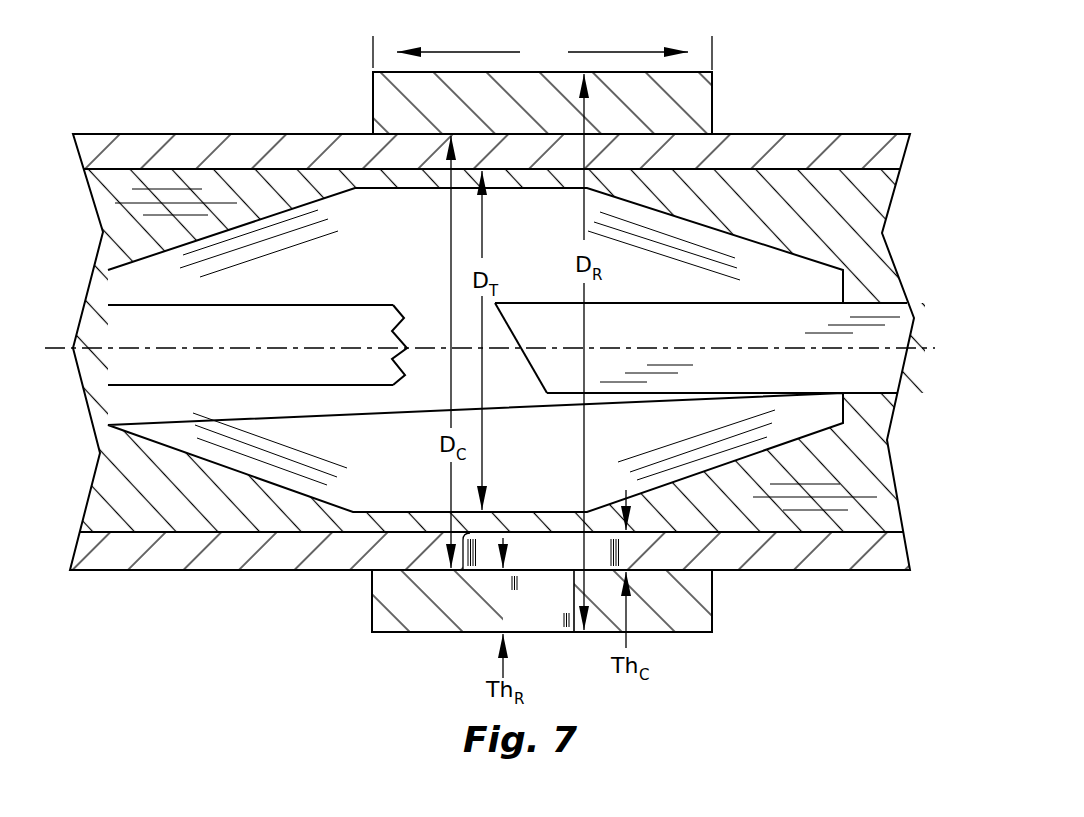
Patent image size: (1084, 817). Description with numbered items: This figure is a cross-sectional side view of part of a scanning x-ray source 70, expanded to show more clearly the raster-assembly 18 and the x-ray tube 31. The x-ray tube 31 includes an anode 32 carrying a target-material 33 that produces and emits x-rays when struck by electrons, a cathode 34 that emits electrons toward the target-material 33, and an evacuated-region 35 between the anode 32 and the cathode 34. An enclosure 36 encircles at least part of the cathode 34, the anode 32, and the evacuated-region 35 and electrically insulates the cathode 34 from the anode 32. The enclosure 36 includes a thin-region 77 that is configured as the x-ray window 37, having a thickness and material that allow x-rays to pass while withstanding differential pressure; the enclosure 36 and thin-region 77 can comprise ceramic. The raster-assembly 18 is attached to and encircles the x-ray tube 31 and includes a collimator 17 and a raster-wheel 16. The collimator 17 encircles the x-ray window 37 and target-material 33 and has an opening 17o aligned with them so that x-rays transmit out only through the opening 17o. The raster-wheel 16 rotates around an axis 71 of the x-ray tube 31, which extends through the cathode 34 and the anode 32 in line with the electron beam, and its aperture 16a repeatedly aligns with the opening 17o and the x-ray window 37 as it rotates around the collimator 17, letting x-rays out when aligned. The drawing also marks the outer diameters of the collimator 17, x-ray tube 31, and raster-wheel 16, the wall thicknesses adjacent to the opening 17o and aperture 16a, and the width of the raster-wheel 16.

The scanning x-ray source 70 is at (180, 72).
The raster-assembly 18 is at (738, 92).
The raster-wheel 16 is at (521, 115).
The aperture 16a is at (565, 611).
The collimator 17 is at (524, 162).
The opening 17o is at (565, 564).
The x-ray tube 31 is at (901, 438).
The anode 32 is at (708, 338).
The target-material 33 is at (528, 372).
The cathode 34 is at (392, 340).
The evacuated-region 35 is at (413, 339).
The enclosure 36 is at (819, 219).
The x-ray window 37 is at (565, 531).
The axis 71 is at (438, 349).
The thin-region 77 is at (539, 518).